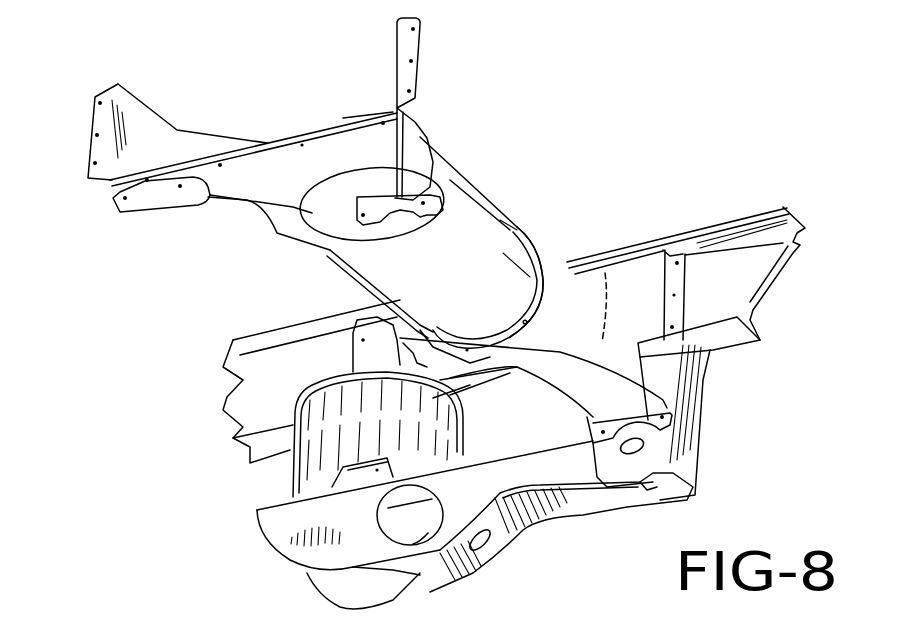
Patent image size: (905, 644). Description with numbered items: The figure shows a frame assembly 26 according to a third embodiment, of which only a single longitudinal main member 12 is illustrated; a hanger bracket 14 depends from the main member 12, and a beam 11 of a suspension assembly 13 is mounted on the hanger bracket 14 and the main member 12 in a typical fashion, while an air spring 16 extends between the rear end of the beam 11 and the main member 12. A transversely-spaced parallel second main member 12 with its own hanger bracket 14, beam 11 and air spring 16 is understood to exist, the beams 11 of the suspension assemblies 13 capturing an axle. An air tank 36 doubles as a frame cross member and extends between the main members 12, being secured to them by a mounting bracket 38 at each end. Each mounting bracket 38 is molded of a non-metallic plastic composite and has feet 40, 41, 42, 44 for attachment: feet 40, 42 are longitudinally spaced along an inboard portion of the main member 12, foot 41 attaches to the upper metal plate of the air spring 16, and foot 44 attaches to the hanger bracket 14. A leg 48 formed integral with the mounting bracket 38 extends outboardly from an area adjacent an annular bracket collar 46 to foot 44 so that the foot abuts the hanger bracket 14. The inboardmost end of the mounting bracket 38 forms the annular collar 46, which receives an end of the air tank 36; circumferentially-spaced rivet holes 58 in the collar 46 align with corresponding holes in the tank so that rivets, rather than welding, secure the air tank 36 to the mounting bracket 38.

The beam 11 is at (330, 598).
The longitudinal main member 12 is at (800, 213).
The suspension assembly 13 is at (515, 543).
The hanger bracket 14 is at (693, 428).
The air spring 16 is at (293, 470).
The frame assembly 26 is at (572, 142).
The air tank 36 is at (478, 190).
The mounting bracket 38 is at (218, 134).
The foot 40 is at (95, 142).
The foot 41 is at (152, 206).
The foot 42 is at (405, 45).
The foot 44 is at (387, 207).
The annular bracket collar 46 is at (560, 312).
The leg 48 is at (277, 233).
The rivet holes 58 is at (548, 290).